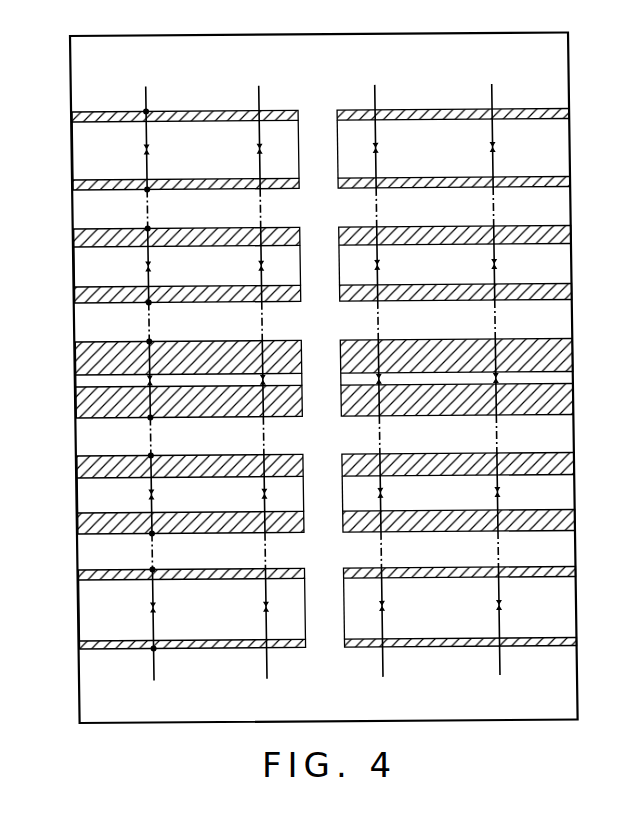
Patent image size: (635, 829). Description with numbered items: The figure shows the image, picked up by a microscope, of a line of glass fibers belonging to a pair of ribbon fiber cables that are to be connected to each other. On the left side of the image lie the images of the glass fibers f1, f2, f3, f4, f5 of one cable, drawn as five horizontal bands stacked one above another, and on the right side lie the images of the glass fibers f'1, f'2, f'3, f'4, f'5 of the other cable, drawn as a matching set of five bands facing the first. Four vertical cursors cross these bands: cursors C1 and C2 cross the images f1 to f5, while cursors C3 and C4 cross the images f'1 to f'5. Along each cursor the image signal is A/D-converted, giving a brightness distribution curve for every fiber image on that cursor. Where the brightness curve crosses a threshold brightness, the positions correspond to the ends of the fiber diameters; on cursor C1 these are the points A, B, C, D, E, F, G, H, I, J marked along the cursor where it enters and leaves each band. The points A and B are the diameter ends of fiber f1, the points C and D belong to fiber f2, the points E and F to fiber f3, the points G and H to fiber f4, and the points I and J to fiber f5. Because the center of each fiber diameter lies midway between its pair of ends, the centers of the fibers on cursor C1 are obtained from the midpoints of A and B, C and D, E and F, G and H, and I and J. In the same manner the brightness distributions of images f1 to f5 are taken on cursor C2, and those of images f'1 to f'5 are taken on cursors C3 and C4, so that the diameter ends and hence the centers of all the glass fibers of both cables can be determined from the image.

The cursor C1 is at (151, 370).
The cursor C2 is at (265, 370).
The cursor C3 is at (380, 368).
The cursor C4 is at (495, 367).
The glass fiber image f1 is at (76, 150).
The glass fiber image f2 is at (76, 266).
The glass fiber image f3 is at (76, 380).
The glass fiber image f4 is at (76, 495).
The glass fiber image f5 is at (76, 608).
The glass fiber image f'1 is at (479, 148).
The glass fiber image f'2 is at (481, 263).
The glass fiber image f'3 is at (485, 377).
The glass fiber image f'4 is at (487, 492).
The glass fiber image f'5 is at (489, 606).
The diameter end A is at (146, 110).
The diameter end B is at (146, 192).
The diameter end C is at (144, 228).
The diameter end D is at (146, 305).
The diameter end E is at (144, 341).
The diameter end F is at (146, 420).
The diameter end G is at (144, 455).
The diameter end H is at (146, 536).
The diameter end I is at (144, 569).
The diameter end J is at (146, 651).